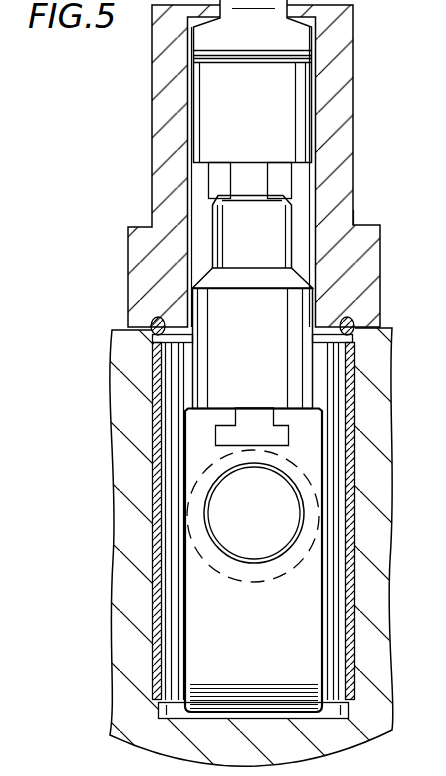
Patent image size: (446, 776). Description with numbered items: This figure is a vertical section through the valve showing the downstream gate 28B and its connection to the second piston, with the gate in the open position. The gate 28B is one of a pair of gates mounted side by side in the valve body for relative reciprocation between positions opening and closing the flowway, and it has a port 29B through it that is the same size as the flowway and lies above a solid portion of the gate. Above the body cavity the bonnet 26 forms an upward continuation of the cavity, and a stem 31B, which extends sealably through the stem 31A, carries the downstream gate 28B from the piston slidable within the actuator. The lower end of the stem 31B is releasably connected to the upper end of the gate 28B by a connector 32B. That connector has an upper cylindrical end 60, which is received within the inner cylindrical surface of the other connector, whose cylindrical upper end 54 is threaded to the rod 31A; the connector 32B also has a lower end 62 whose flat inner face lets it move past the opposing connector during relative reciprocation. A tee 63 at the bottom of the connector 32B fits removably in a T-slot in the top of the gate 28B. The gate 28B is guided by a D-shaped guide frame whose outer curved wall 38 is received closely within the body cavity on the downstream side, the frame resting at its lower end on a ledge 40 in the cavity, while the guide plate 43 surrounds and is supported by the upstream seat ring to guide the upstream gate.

The bonnet 26 is at (356, 116).
The stem 31A is at (313, 44).
The stem 31B is at (391, 192).
The connector 32B is at (318, 307).
The outer curved wall 38 is at (152, 558).
The ledge 40 is at (350, 700).
The guide plate 43 is at (354, 542).
The cylindrical upper end 54 is at (263, 128).
The upper cylindrical end 60 is at (292, 230).
The lower end 62 is at (260, 338).
The tee 63 is at (290, 434).
The gate 28B is at (275, 652).
The port 29B is at (207, 522).